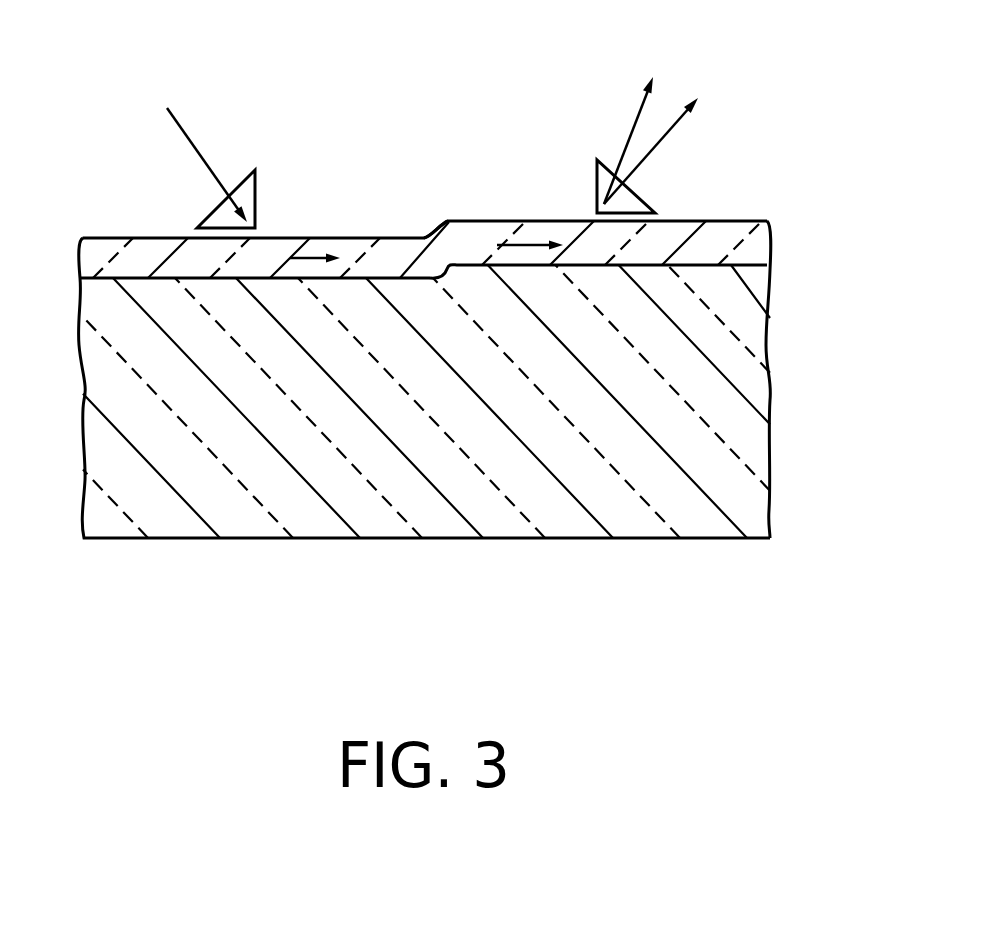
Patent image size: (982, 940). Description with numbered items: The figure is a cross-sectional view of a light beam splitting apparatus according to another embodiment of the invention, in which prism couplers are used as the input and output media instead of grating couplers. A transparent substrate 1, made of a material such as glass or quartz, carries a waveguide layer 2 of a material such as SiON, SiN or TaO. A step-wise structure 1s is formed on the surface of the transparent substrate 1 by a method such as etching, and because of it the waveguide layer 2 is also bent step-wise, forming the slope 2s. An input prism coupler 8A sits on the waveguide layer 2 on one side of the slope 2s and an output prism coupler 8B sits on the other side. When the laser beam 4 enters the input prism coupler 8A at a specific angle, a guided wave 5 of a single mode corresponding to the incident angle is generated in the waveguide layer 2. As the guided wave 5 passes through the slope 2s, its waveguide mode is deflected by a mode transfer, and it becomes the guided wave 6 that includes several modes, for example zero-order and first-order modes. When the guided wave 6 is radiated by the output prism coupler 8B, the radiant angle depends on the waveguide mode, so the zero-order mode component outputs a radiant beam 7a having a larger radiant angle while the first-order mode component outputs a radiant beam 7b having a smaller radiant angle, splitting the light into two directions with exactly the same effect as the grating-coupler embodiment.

The transparent substrate 1 is at (748, 387).
The step-wise structure 1s is at (445, 272).
The waveguide layer 2 is at (755, 248).
The slope 2s is at (428, 238).
The laser beam 4 is at (185, 130).
The guided wave 5 is at (308, 257).
The guided wave 6 is at (529, 243).
The radiant beam 7a is at (675, 129).
The radiant beam 7b is at (644, 108).
The prism coupler 8A is at (260, 187).
The prism coupler 8B is at (596, 191).